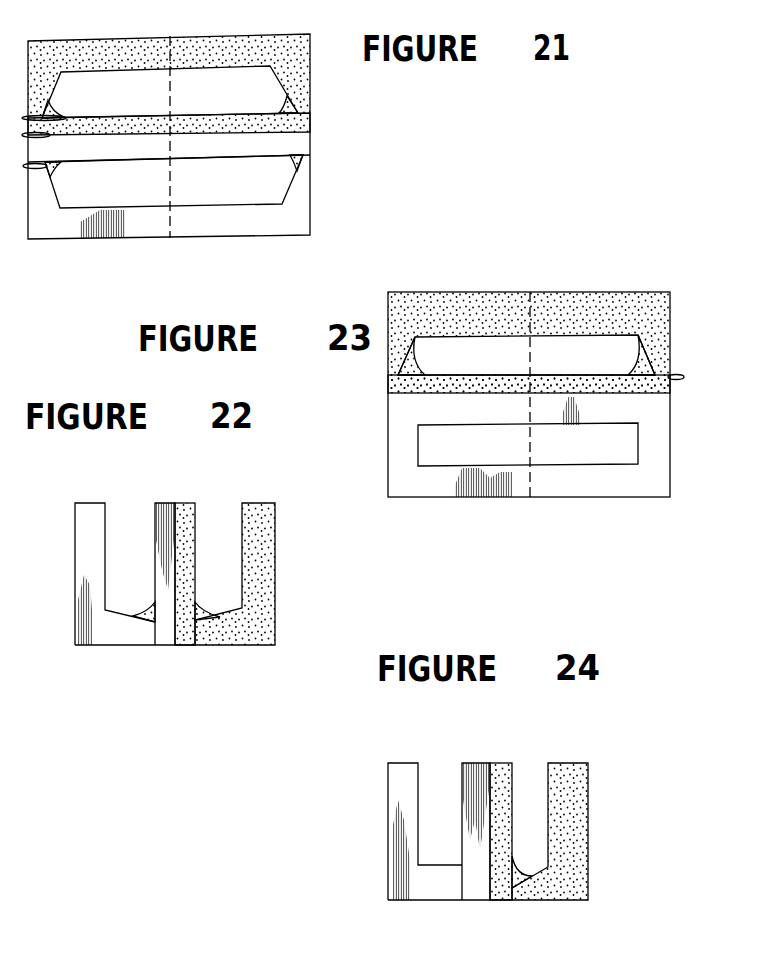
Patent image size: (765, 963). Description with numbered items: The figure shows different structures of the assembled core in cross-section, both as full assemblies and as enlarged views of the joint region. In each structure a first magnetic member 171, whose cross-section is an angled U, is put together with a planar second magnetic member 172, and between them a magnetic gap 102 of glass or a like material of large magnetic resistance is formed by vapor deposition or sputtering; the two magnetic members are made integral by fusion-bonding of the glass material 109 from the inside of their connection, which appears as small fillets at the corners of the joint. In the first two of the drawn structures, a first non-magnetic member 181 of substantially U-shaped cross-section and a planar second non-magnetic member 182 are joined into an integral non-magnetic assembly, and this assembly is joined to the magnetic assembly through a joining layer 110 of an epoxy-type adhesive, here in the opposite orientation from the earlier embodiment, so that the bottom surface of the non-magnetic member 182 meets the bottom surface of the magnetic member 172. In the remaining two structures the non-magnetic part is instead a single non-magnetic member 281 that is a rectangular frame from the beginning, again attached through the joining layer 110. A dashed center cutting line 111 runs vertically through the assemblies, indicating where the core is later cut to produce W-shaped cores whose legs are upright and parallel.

In FIG. 21, the magnetic gap 102 is at (311, 118).
In FIG. 23, the magnetic gap 102 is at (670, 377).
In FIG. 22, the magnetic gap 102 is at (197, 642).
In FIG. 24, the magnetic gap 102 is at (508, 900).
In FIG. 21, the glass material 109 is at (50, 103).
In FIG. 23, the glass material 109 is at (643, 360).
In FIG. 22, the glass material 109 is at (138, 623).
In FIG. 24, the glass material 109 is at (527, 885).
In FIG. 21, the joining layer 110 is at (311, 122).
In FIG. 23, the joining layer 110 is at (670, 393).
In FIG. 22, the joining layer 110 is at (175, 501).
In FIG. 24, the joining layer 110 is at (490, 763).
In FIG. 21, the center cutting line 111 is at (168, 35).
In FIG. 23, the center cutting line 111 is at (530, 292).
In FIG. 21, the first magnetic member 171 is at (212, 36).
In FIG. 23, the first magnetic member 171 is at (598, 292).
In FIG. 22, the first magnetic member 171 is at (253, 503).
In FIG. 24, the first magnetic member 171 is at (563, 763).
In FIG. 21, the second magnetic member 172 is at (311, 116).
In FIG. 23, the second magnetic member 172 is at (388, 383).
In FIG. 22, the second magnetic member 172 is at (183, 503).
In FIG. 24, the second magnetic member 172 is at (500, 763).
In FIG. 22, the first non-magnetic member 181 is at (158, 501).
In FIG. 21, the second non-magnetic member 182 is at (311, 141).
In FIG. 22, the second non-magnetic member 182 is at (90, 505).
In FIG. 23, the non-magnetic member 281 is at (670, 478).
In FIG. 24, the non-magnetic member 281 is at (402, 763).